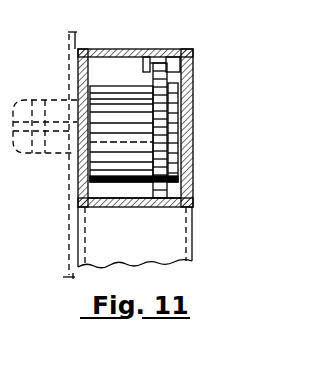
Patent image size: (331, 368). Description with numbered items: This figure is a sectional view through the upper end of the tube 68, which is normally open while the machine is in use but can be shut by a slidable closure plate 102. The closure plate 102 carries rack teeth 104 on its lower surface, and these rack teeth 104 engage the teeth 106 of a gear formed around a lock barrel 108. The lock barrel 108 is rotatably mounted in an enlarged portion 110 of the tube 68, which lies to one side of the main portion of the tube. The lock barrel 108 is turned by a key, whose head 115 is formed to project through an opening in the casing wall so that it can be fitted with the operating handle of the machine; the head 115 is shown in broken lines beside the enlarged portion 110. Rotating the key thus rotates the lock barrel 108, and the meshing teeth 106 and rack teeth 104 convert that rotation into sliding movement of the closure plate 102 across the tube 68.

The slidable closure plate 102 is at (139, 112).
The rack teeth 104 is at (211, 131).
The gear teeth 106 is at (199, 127).
The lock barrel 108 is at (134, 98).
The enlarged portion of the tube 110 is at (171, 192).
The tube 68 is at (163, 237).
The head of the key 115 is at (45, 154).